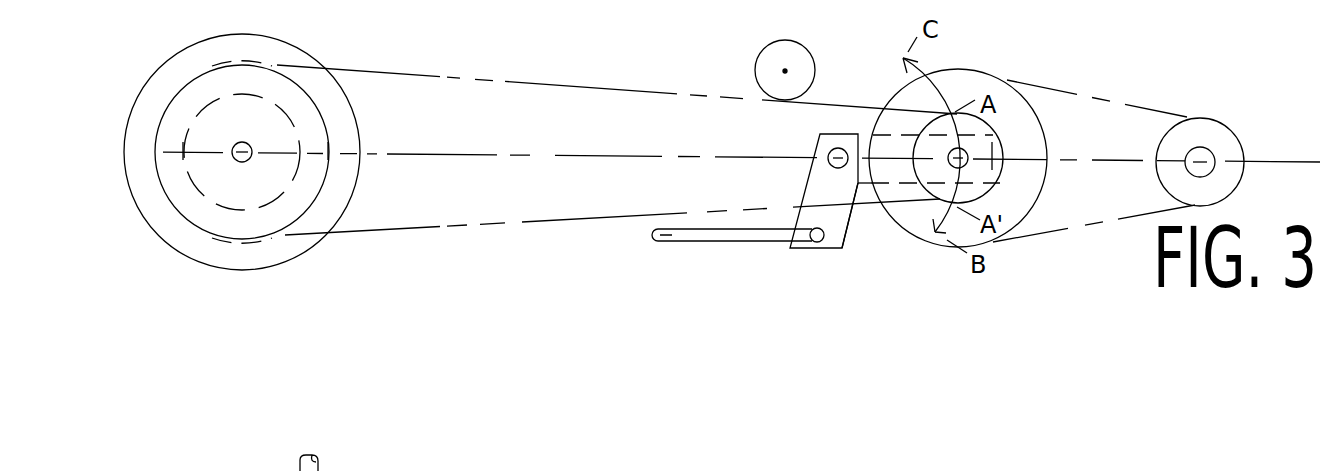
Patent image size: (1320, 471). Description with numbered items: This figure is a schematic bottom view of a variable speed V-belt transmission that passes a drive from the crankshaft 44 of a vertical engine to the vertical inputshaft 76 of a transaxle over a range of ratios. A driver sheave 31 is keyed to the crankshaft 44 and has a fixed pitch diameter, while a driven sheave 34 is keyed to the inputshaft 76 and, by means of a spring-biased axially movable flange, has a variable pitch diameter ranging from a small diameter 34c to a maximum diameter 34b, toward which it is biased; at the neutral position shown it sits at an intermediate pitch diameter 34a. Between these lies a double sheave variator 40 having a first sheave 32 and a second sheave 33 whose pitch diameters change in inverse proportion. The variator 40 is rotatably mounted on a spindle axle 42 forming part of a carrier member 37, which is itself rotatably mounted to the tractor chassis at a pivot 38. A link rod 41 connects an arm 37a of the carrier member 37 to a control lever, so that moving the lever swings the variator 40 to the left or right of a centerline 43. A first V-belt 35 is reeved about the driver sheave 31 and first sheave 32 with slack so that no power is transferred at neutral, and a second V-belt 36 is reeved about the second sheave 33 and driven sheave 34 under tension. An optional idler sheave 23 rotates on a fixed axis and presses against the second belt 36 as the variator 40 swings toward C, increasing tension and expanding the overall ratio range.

The idler sheave 23 is at (764, 72).
The driver sheave 31 is at (1230, 187).
The first sheave 32 is at (973, 70).
The second sheave 33 is at (993, 187).
The driven sheave 34 is at (298, 248).
The intermediate pitch diameter 34a is at (330, 117).
The maximum pitch diameter 34b is at (358, 192).
The minimum pitch diameter 34c is at (275, 90).
The first V-belt 35 is at (1095, 233).
The second V-belt 36 is at (537, 227).
The carrier member 37 is at (895, 148).
The arm 37a is at (835, 218).
The pivot 38 is at (830, 170).
The double sheave variator 40 is at (913, 228).
The link rod 41 is at (678, 237).
The spindle axle 42 is at (967, 153).
The centerline 43 is at (593, 163).
The crankshaft 44 is at (1200, 152).
The inputshaft 76 is at (256, 128).